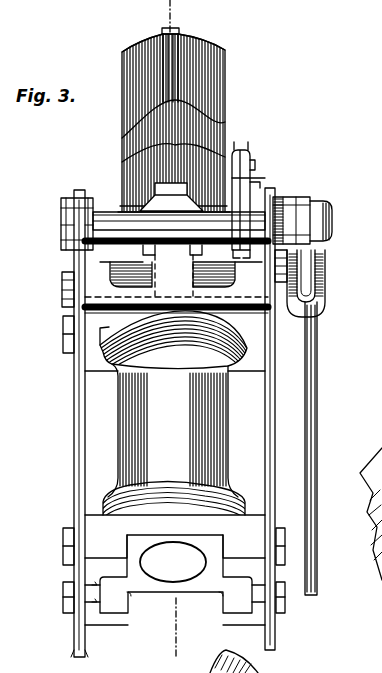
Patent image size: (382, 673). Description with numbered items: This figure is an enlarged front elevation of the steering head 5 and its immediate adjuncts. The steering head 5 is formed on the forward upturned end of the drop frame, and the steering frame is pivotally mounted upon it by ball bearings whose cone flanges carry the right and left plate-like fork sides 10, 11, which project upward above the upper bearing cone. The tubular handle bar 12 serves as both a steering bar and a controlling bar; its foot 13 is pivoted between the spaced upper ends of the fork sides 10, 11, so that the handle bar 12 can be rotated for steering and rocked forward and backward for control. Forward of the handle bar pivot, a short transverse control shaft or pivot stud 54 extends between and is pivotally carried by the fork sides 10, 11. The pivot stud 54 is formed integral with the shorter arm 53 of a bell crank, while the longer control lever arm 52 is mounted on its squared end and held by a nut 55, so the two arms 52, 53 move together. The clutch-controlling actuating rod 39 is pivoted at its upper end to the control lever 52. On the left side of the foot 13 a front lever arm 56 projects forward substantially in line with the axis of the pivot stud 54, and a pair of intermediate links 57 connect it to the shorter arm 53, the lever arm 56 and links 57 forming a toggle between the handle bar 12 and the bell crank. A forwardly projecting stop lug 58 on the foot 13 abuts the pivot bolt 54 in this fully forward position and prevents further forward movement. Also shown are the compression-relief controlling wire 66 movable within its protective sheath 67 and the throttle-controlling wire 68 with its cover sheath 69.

The steering head 5 is at (183, 398).
The right fork side 10 is at (75, 452).
The left fork side 11 is at (268, 462).
The tubular handle bar 12 is at (191, 123).
The foot of the handle bar 13 is at (160, 16).
The clutch-controlling actuating rod 39 is at (323, 448).
The control lever arm 52 is at (311, 256).
The shorter bell crank arm 53 is at (249, 182).
The transverse control shaft 54 is at (176, 226).
The nut 55 is at (323, 205).
The front lever arm 56 is at (218, 263).
The intermediate links 57 is at (249, 152).
The stop lug 58 is at (160, 192).
The controlling wire 66 is at (176, 28).
The protective sheath 67 is at (177, 43).
The throttle-controlling wire 68 is at (161, 31).
The cover sheath 69 is at (163, 72).